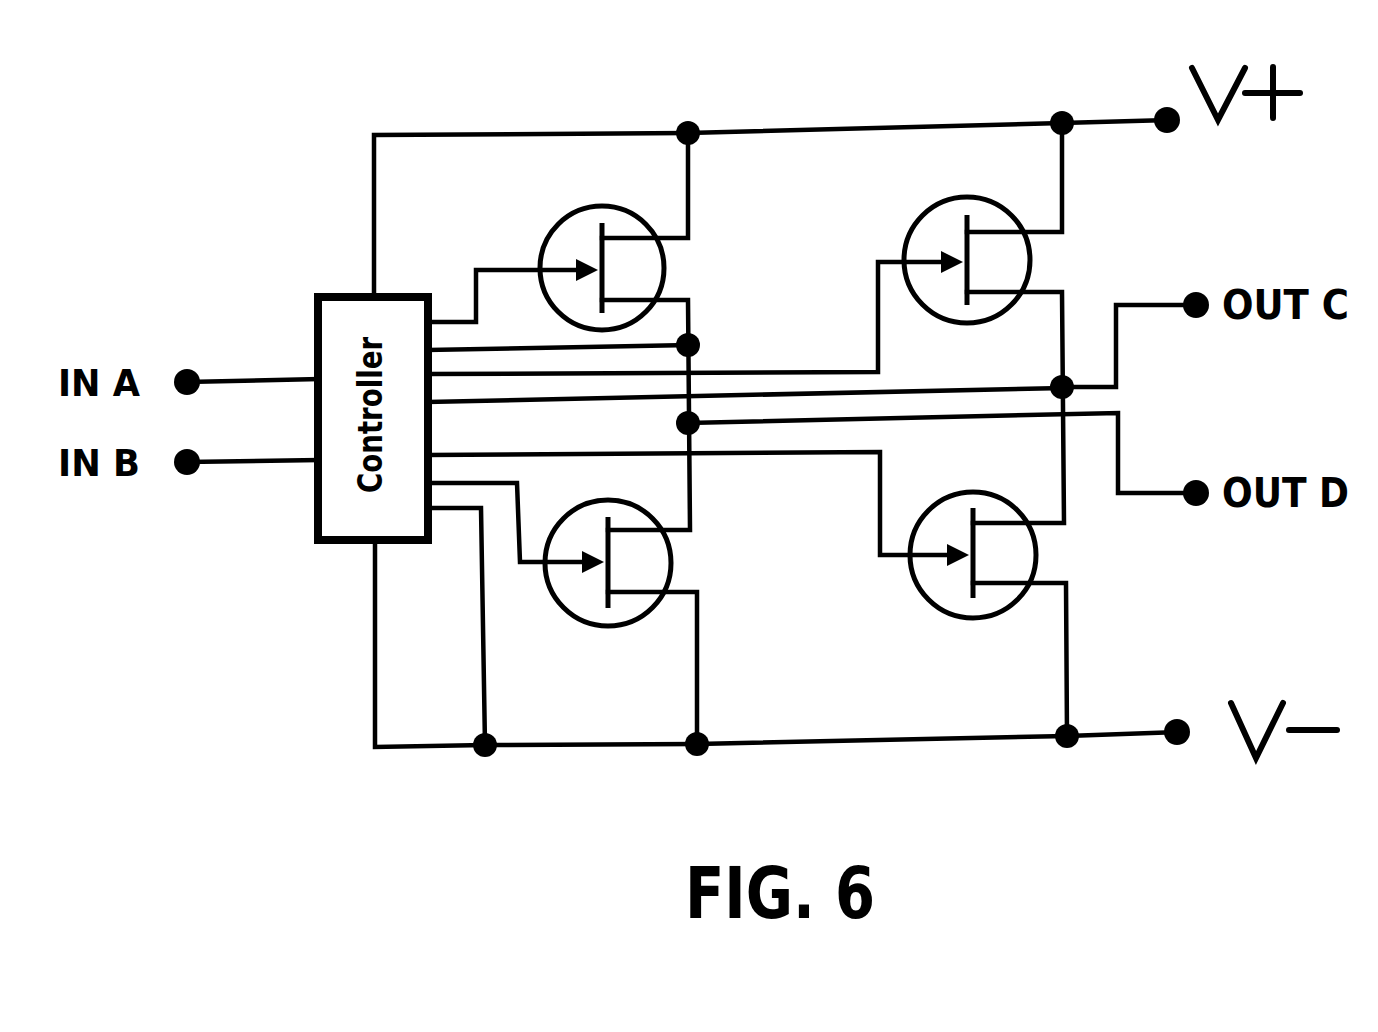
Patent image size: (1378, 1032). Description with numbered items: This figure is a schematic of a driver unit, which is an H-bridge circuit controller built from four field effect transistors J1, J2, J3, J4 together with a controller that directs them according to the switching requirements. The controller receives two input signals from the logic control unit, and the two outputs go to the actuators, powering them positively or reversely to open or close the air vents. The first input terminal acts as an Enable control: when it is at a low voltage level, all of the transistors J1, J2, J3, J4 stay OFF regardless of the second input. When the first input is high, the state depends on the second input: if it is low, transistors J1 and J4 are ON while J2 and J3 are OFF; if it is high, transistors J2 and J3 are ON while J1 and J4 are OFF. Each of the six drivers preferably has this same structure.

The field effect transistor J1 is at (648, 268).
The field effect transistor J2 is at (653, 563).
The field effect transistor J3 is at (1003, 260).
The field effect transistor J4 is at (1008, 555).